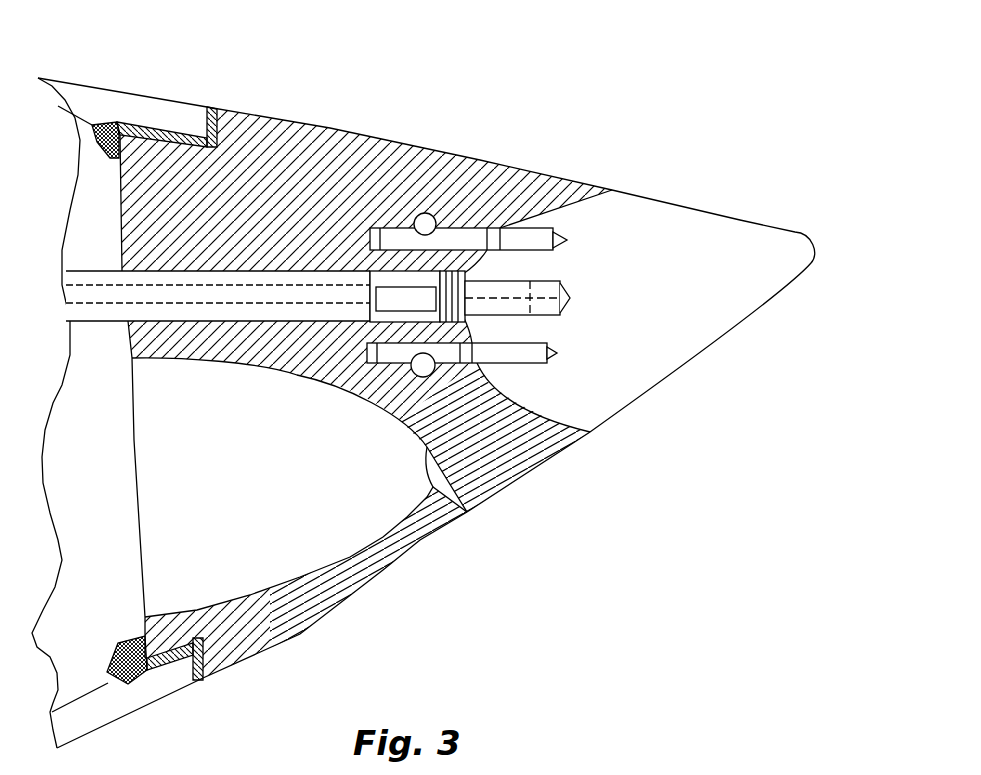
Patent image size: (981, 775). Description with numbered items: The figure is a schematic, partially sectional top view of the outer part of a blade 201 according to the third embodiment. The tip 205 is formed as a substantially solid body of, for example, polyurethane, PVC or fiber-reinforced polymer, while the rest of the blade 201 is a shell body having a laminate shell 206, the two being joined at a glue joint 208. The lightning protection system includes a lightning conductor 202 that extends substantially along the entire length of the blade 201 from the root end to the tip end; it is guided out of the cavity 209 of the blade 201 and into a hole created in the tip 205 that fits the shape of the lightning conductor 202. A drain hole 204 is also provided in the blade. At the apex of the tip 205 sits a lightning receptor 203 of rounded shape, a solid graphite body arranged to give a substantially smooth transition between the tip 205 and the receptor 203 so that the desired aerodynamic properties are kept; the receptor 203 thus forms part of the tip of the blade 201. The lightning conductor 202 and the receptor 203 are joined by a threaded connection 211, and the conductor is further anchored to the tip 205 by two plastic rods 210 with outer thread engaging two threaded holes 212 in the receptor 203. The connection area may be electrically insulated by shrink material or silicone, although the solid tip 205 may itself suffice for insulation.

The blade 201 is at (605, 103).
The lightning conductor 202 is at (287, 293).
The lightning receptor 203 is at (716, 315).
The drain hole 204 is at (478, 515).
The tip 205 is at (533, 458).
The laminate shell 206 is at (87, 93).
The glue joint 208 is at (211, 110).
The cavity 209 is at (388, 558).
The plastic rod 210 is at (462, 245).
The threaded connection 211 is at (397, 287).
The threaded hole 212 is at (547, 230).